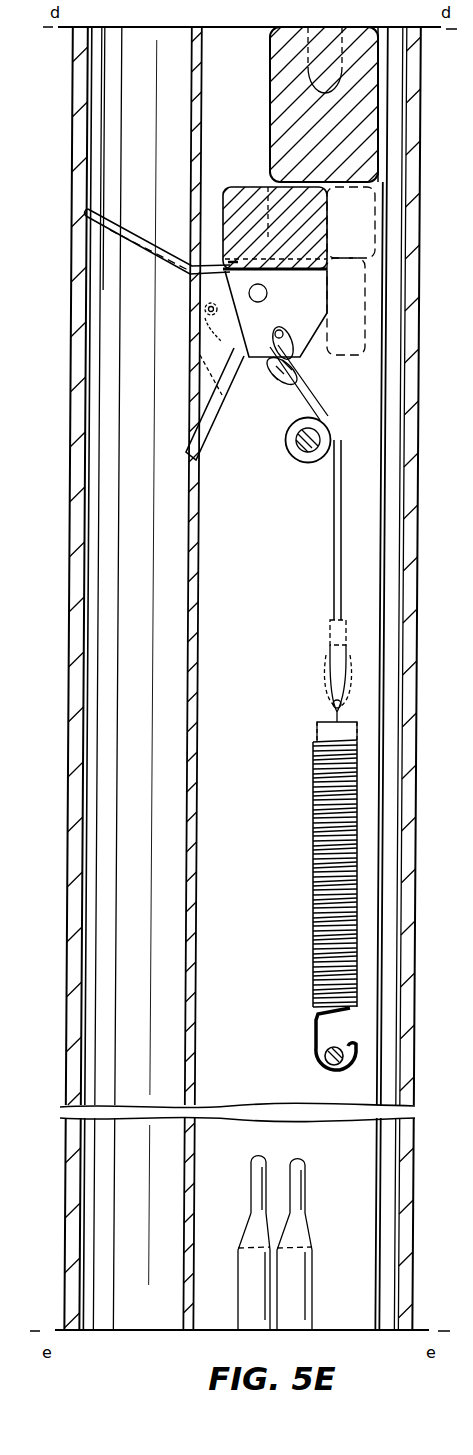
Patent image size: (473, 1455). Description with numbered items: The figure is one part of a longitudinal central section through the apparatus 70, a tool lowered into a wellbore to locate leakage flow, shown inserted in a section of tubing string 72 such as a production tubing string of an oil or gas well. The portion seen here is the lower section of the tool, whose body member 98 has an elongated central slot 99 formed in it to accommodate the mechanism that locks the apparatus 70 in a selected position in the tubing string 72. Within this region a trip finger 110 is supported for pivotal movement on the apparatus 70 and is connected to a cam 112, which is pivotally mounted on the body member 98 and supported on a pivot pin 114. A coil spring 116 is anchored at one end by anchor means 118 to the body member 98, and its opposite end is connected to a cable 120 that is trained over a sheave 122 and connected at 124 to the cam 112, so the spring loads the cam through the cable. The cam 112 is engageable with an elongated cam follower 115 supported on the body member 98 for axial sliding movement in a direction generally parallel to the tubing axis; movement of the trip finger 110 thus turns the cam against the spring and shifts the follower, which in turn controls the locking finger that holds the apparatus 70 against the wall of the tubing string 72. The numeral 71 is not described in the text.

The apparatus 70 is at (166, 497).
The right frame wall 71 is at (433, 678).
The tubing string 72 is at (70, 352).
The body member 98 is at (387, 243).
The elongated central slot 99 is at (245, 806).
The trip finger 110 is at (150, 262).
The cam 112 is at (262, 185).
The pivot pin 114 is at (267, 297).
The cam follower 115 is at (380, 114).
The coil spring 116 is at (357, 832).
The anchor means 118 is at (340, 1047).
The cable 120 is at (333, 597).
The sheave 122 is at (308, 463).
The connection to cam 124 is at (292, 384).